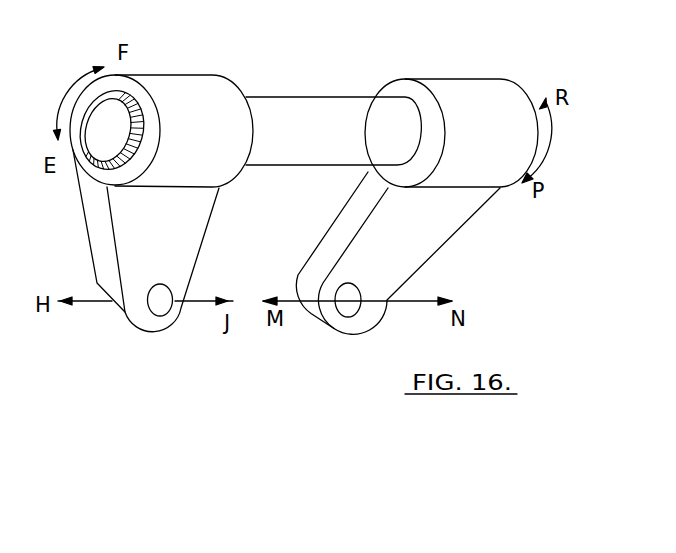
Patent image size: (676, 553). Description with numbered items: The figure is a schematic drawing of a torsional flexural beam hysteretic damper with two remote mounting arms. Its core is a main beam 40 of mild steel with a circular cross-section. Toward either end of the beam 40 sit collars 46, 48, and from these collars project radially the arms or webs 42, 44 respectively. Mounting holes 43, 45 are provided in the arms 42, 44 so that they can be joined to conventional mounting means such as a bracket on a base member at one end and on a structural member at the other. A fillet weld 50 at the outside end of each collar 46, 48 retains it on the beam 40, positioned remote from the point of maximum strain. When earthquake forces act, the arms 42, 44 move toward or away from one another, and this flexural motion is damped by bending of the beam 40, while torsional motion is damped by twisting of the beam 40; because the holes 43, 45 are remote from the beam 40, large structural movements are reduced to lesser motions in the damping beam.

The main beam 40 is at (322, 118).
The arm 42 is at (127, 228).
The mounting hole 43 is at (160, 302).
The arm 44 is at (440, 253).
The mounting hole 45 is at (350, 307).
The collar 46 is at (218, 88).
The collar 48 is at (503, 95).
The fillet weld 50 is at (140, 118).